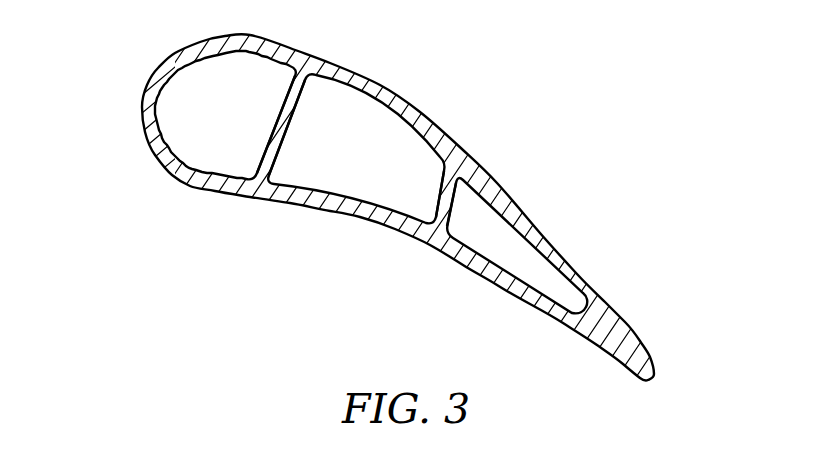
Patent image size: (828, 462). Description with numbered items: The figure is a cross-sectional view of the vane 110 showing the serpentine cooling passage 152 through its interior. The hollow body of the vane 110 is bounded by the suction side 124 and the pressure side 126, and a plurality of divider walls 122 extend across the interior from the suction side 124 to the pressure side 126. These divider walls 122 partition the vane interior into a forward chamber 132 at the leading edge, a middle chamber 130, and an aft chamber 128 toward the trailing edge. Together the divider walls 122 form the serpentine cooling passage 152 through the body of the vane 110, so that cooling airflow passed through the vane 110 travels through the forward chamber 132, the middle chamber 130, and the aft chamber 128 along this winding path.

The vane 110 is at (383, 231).
The divider walls 122 is at (300, 103).
The suction side 124 is at (500, 163).
The pressure side 126 is at (282, 221).
The aft chamber 128 is at (540, 281).
The middle chamber 130 is at (355, 188).
The forward chamber 132 is at (188, 83).
The serpentine cooling passage 152 is at (479, 98).